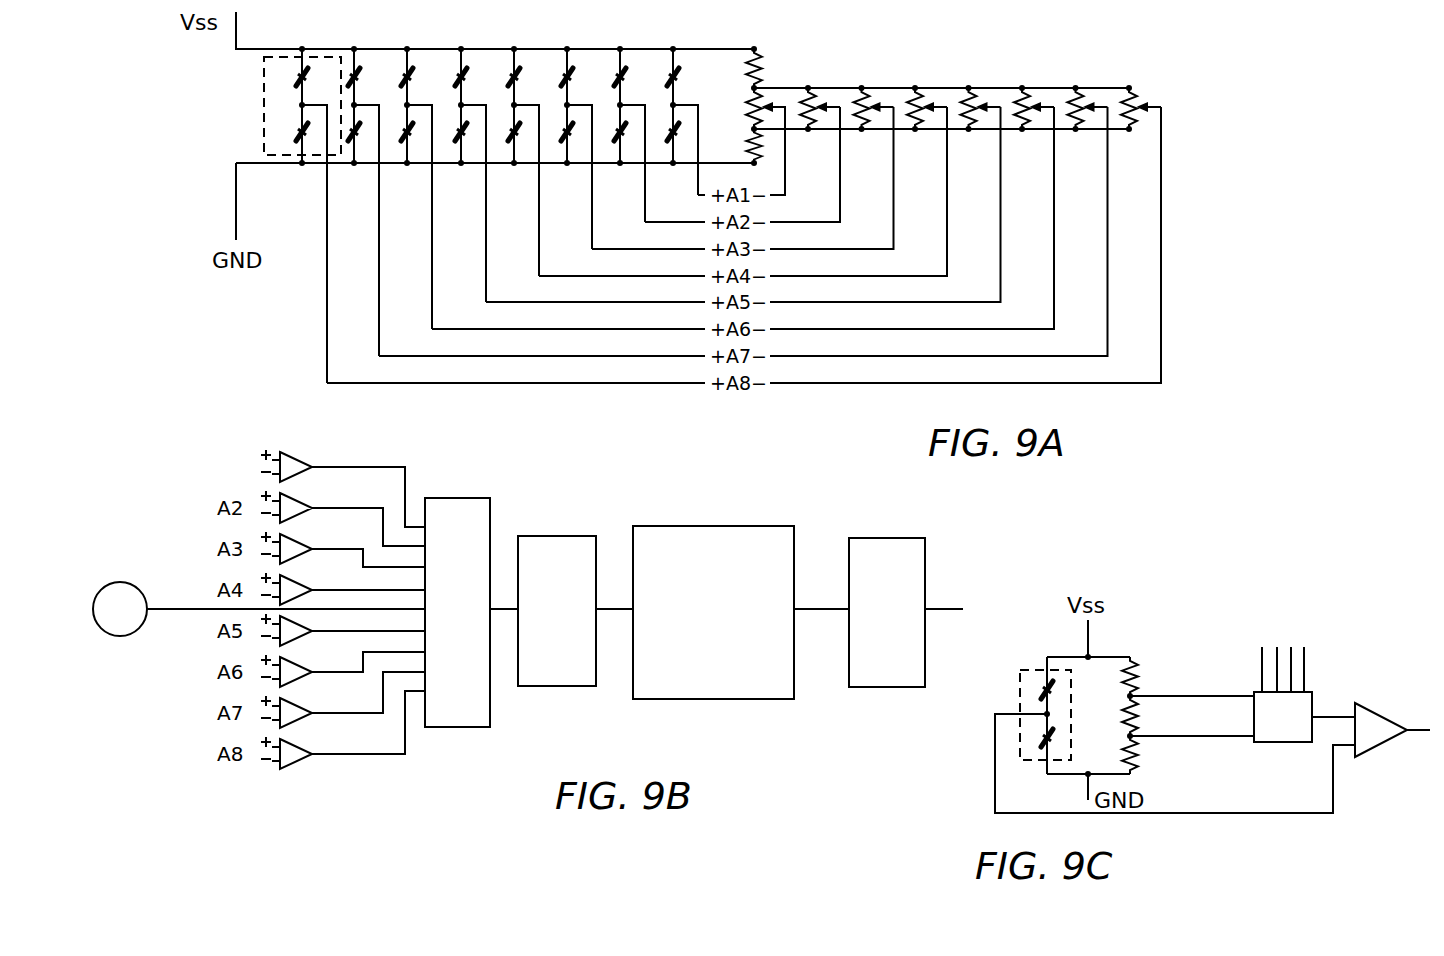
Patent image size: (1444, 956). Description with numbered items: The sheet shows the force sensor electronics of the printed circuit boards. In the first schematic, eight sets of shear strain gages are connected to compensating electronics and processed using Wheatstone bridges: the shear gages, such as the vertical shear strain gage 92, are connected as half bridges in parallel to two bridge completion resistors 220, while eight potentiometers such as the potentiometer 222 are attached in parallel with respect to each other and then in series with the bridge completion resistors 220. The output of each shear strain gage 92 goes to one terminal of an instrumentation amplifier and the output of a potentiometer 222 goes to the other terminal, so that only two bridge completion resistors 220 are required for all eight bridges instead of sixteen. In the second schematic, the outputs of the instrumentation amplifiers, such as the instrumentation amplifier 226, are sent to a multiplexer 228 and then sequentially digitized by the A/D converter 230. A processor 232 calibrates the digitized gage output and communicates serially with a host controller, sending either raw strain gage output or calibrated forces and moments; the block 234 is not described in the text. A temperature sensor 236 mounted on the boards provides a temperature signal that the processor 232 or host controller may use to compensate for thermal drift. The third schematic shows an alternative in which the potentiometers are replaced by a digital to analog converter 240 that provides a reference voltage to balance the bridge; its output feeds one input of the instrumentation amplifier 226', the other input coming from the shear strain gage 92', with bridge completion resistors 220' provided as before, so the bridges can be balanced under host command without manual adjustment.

In FIG. 9A, the vertical shear strain gage 92 is at (271, 214).
In FIG. 9A, the bridge completion resistors 220 is at (808, 101).
In FIG. 9A, the potentiometer 222 is at (973, 97).
In FIG. 9B, the instrumentation amplifier 226 is at (319, 454).
In FIG. 9B, the multiplexer 228 is at (478, 601).
In FIG. 9B, the A/D converter 230 is at (578, 603).
In FIG. 9B, the processor 232 is at (732, 621).
In FIG. 9B, the output stage 234 is at (908, 621).
In FIG. 9B, the temperature sensor 236 is at (121, 582).
In FIG. 9C, the shear strain gage 92' is at (1026, 702).
In FIG. 9C, the bridge completion resistors 220' is at (1171, 711).
In FIG. 9C, the digital to analog converter 240 is at (1312, 700).
In FIG. 9C, the instrumentation amplifier 226' is at (1394, 744).